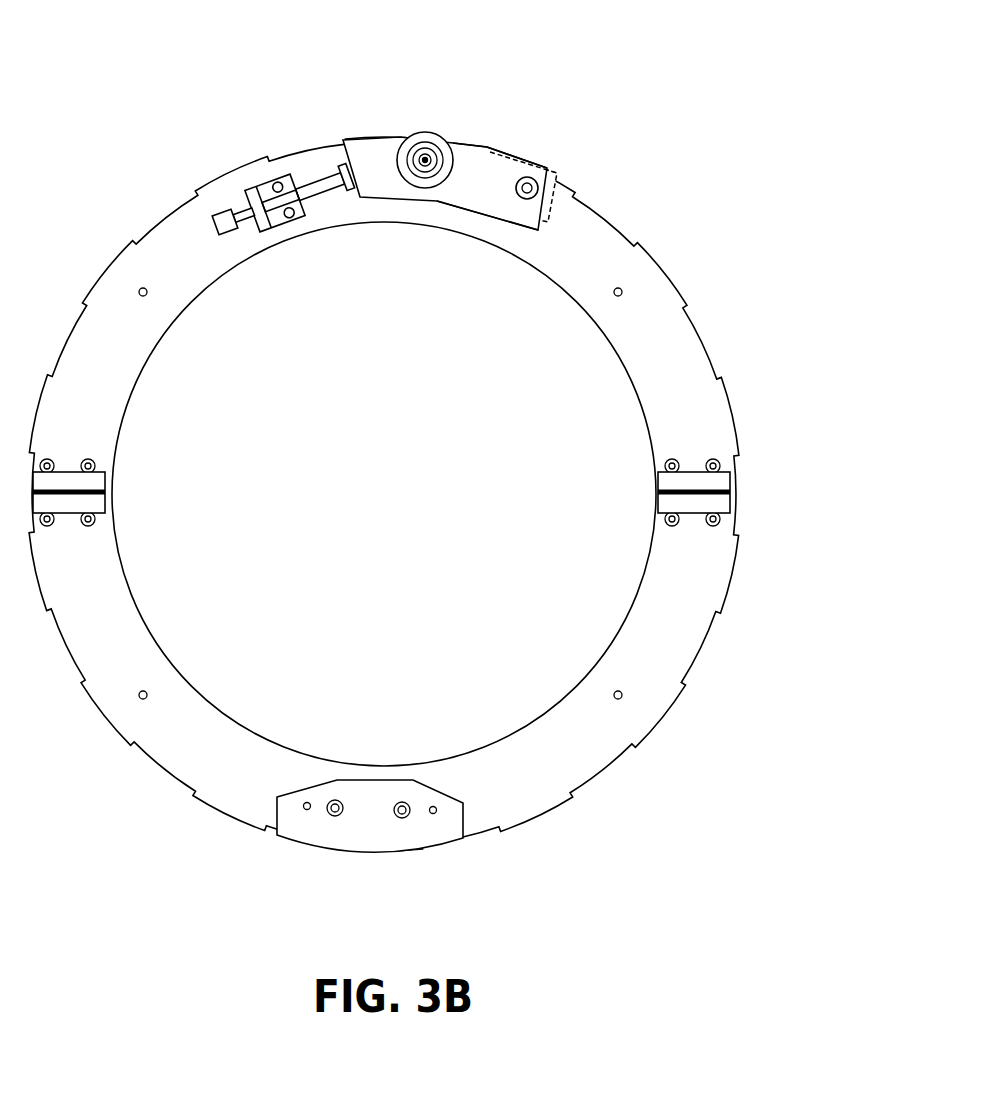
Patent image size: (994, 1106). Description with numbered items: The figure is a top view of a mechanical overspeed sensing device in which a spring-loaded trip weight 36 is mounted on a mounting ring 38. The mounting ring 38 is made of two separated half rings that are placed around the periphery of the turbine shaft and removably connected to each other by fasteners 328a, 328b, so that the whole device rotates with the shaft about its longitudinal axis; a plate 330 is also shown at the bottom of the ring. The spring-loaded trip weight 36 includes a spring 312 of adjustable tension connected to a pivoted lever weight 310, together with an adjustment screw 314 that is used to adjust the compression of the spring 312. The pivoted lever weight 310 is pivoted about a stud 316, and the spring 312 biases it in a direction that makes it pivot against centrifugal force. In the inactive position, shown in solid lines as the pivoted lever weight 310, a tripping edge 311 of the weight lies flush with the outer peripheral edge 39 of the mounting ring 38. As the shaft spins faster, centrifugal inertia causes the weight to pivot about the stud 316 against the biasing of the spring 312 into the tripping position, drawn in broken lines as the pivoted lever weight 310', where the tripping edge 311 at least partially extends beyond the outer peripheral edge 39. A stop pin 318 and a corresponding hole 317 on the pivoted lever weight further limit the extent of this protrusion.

The spring-loaded trip weight 36 is at (558, 99).
The mounting ring 38 is at (738, 405).
The outer peripheral edge 39 is at (486, 147).
The pivoted lever weight 310 is at (445, 247).
The tripping position of pivoted lever weight 310' is at (519, 182).
The tripping edge 311 is at (517, 150).
The spring 312 is at (326, 192).
The adjustment screw 314 is at (220, 212).
The stud 316 is at (424, 165).
The hole 317 is at (540, 200).
The stop pin 318 is at (525, 197).
The fastener 328a is at (690, 513).
The fastener 328b is at (65, 515).
The bottom mounting plate 330 is at (367, 778).